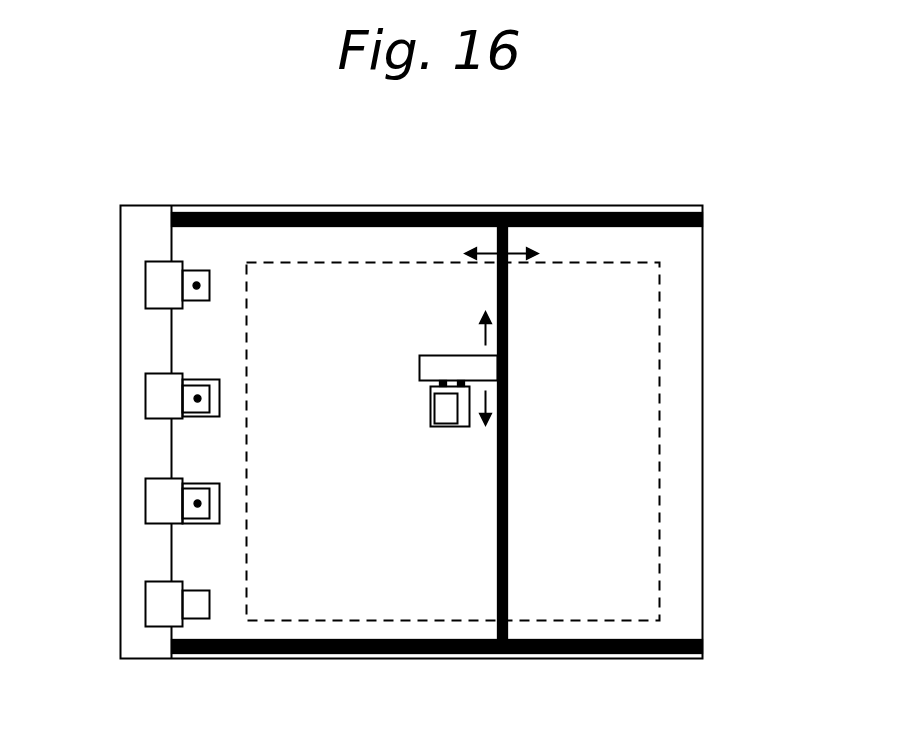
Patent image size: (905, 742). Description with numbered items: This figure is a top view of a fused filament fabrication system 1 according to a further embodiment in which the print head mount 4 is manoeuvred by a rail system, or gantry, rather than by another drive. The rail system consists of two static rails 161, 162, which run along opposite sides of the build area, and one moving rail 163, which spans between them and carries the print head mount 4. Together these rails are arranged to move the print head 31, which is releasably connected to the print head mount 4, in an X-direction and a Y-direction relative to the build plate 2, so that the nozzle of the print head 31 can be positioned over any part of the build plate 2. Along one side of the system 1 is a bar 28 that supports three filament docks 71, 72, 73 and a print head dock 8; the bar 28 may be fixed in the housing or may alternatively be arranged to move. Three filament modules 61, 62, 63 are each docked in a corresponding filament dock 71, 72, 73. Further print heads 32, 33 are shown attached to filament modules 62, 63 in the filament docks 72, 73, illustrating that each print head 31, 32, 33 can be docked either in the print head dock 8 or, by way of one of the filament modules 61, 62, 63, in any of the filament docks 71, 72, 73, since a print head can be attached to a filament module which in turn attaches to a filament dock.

The fused filament fabrication system 1 is at (752, 322).
The build plate 2 is at (658, 512).
The print head mount 4 is at (440, 352).
The print head dock 8 is at (150, 598).
The bar 28 is at (140, 645).
The print head 31 is at (445, 423).
The print head 32 is at (210, 377).
The print head 33 is at (202, 480).
The filament module 61 is at (208, 277).
The filament module 62 is at (208, 393).
The filament module 63 is at (208, 500).
The filament dock 71 is at (148, 279).
The filament dock 72 is at (148, 393).
The filament dock 73 is at (148, 497).
The static rail 161 is at (600, 223).
The static rail 162 is at (608, 632).
The moving rail 163 is at (505, 485).